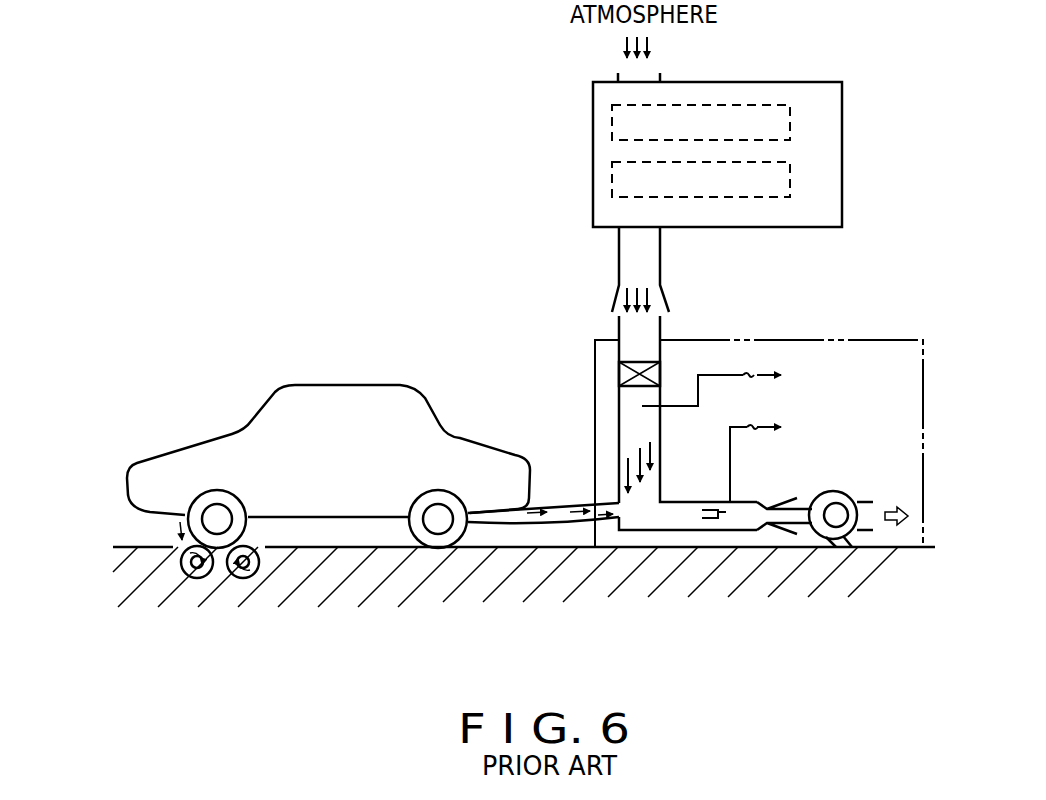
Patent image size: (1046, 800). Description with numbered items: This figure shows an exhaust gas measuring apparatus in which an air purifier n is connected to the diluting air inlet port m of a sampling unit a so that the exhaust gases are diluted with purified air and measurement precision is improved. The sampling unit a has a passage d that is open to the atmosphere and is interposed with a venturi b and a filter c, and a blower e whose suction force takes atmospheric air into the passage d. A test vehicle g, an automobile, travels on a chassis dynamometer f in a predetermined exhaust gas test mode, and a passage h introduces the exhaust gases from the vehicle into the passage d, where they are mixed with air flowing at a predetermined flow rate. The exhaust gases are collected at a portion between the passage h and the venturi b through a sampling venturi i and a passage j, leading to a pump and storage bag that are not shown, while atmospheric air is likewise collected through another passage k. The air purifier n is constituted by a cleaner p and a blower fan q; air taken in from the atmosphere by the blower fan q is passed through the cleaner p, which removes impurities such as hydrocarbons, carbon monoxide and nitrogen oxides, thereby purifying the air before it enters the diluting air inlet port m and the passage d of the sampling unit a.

The sampling unit a is at (925, 470).
The venturi b is at (770, 532).
The filter c is at (619, 372).
The passage d is at (619, 421).
The blower e is at (844, 493).
The chassis dynamometer f is at (195, 579).
The test vehicle g is at (433, 408).
The passage h is at (558, 528).
The sampling venturi i is at (712, 528).
The passage j is at (730, 463).
The passage k is at (683, 406).
The diluting air inlet port m is at (618, 320).
The air purifier n is at (843, 163).
The cleaner p is at (611, 124).
The blower fan q is at (611, 178).